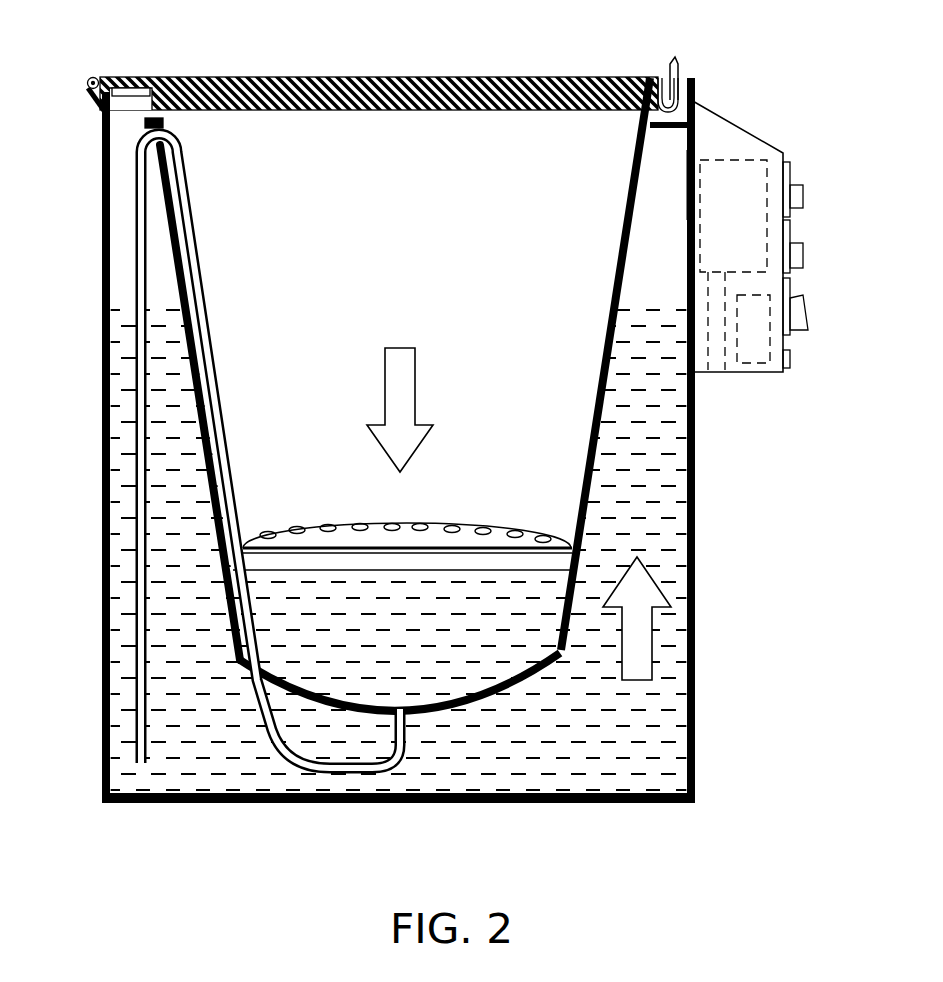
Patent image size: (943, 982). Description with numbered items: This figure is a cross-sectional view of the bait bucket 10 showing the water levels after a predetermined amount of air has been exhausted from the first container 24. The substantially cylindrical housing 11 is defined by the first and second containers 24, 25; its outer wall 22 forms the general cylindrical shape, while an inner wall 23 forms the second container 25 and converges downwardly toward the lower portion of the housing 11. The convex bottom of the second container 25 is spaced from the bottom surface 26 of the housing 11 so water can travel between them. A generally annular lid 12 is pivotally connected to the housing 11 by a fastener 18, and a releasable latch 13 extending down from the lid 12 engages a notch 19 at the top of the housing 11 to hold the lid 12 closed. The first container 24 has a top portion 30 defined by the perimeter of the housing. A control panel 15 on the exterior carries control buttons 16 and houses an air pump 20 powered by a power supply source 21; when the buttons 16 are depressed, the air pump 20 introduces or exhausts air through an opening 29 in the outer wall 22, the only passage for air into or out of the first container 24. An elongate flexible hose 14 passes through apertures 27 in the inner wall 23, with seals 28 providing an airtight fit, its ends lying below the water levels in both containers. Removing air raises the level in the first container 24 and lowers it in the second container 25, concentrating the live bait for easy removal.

The bait bucket 10 is at (488, 46).
The housing 11 is at (102, 488).
The lid 12 is at (243, 77).
The releasable latch 13 is at (683, 60).
The elongate flexible hose 14 is at (192, 233).
The control panel 15 is at (738, 135).
The control buttons 16 is at (815, 168).
The fastener 18 is at (88, 86).
The notch 19 is at (665, 83).
The air pump 20 is at (755, 229).
The power supply source 21 is at (757, 357).
The outer wall 22 is at (695, 537).
The inner wall 23 is at (578, 500).
The first container 24 is at (660, 752).
The second container 25 is at (435, 249).
The bottom surface 26 is at (217, 800).
The apertures 27 is at (163, 119).
The seals 28 is at (148, 196).
The opening 29 is at (690, 178).
The top portion 30 is at (128, 82).